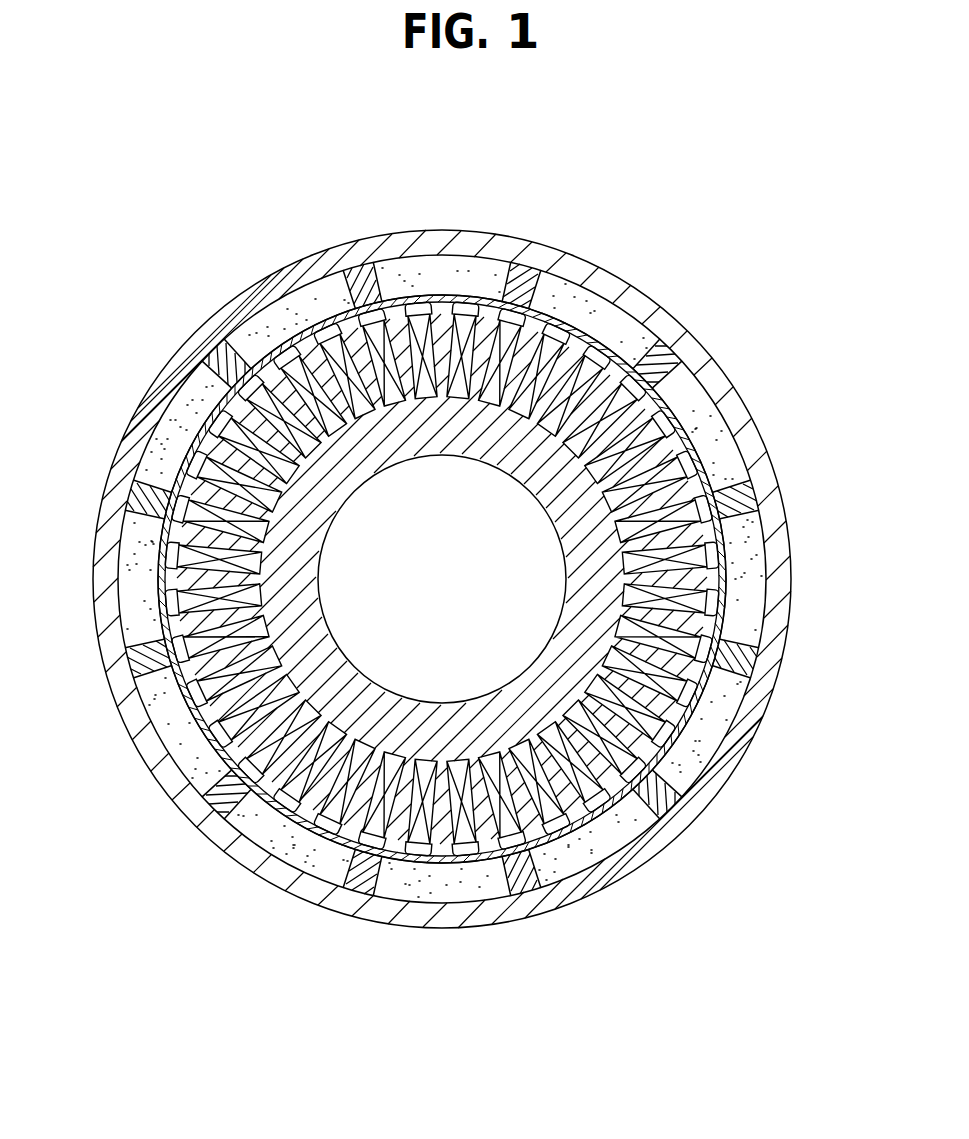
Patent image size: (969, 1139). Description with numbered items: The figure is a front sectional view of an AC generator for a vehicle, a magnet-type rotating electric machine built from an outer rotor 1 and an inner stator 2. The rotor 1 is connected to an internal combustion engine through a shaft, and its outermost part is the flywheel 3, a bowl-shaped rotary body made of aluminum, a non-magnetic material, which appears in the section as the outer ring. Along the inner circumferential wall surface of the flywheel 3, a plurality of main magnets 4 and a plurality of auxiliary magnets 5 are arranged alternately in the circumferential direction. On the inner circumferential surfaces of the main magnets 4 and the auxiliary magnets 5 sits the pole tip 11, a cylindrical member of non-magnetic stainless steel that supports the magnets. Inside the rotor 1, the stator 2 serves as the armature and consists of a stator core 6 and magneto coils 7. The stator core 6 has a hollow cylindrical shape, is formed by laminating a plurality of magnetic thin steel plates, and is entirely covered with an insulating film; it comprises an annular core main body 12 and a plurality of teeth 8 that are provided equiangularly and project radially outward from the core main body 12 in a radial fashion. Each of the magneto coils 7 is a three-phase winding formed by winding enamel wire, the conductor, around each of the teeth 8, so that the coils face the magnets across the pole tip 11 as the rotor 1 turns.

The rotor 1 is at (612, 838).
The stator 2 is at (345, 755).
The flywheel 3 is at (480, 242).
The main magnets 4 is at (143, 597).
The auxiliary magnets 5 is at (362, 265).
The stator core 6 is at (313, 468).
The magneto coils 7 is at (217, 685).
The teeth 8 is at (197, 435).
The pole tip 11 is at (568, 862).
The core main body 12 is at (587, 583).